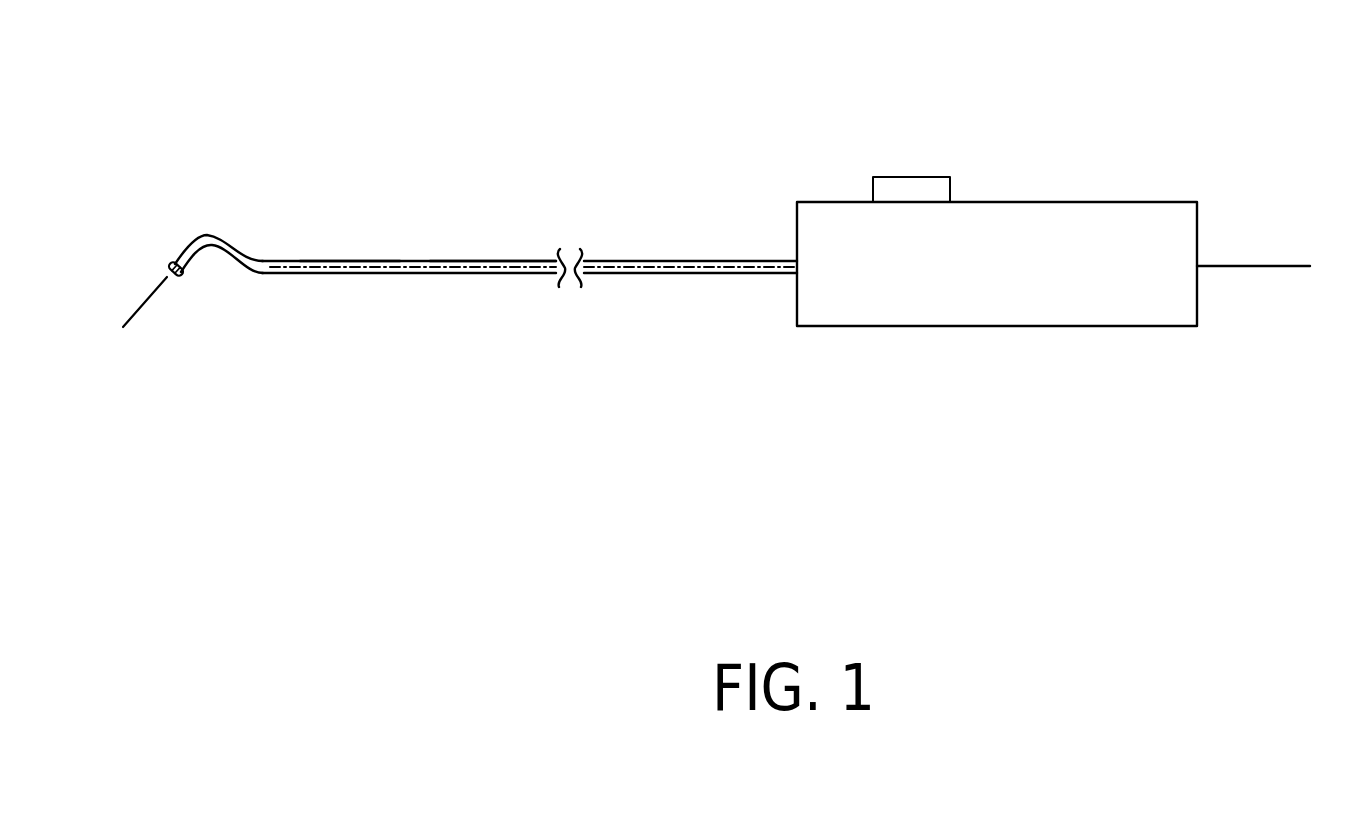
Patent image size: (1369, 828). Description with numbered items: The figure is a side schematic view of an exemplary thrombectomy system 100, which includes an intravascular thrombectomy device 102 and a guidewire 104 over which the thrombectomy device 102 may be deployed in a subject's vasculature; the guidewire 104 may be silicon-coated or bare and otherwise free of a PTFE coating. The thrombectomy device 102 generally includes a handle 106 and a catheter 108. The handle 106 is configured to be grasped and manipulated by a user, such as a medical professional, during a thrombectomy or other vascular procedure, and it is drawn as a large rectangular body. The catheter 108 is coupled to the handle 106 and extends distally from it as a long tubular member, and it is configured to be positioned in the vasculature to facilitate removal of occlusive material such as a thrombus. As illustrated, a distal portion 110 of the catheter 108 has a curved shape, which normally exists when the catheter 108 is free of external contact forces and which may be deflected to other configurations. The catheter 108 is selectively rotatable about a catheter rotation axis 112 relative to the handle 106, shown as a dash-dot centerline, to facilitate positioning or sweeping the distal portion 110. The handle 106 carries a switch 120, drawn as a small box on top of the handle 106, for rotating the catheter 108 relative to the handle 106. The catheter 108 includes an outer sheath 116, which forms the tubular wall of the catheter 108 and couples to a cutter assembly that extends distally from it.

The thrombectomy system 100 is at (1057, 104).
The thrombectomy device 102 is at (755, 278).
The guidewire 104 is at (126, 322).
The handle 106 is at (975, 276).
The catheter 108 is at (345, 261).
The distal portion 110 is at (216, 233).
The catheter rotation axis 112 is at (373, 276).
The outer sheath 116 is at (462, 261).
The switch 120 is at (932, 188).